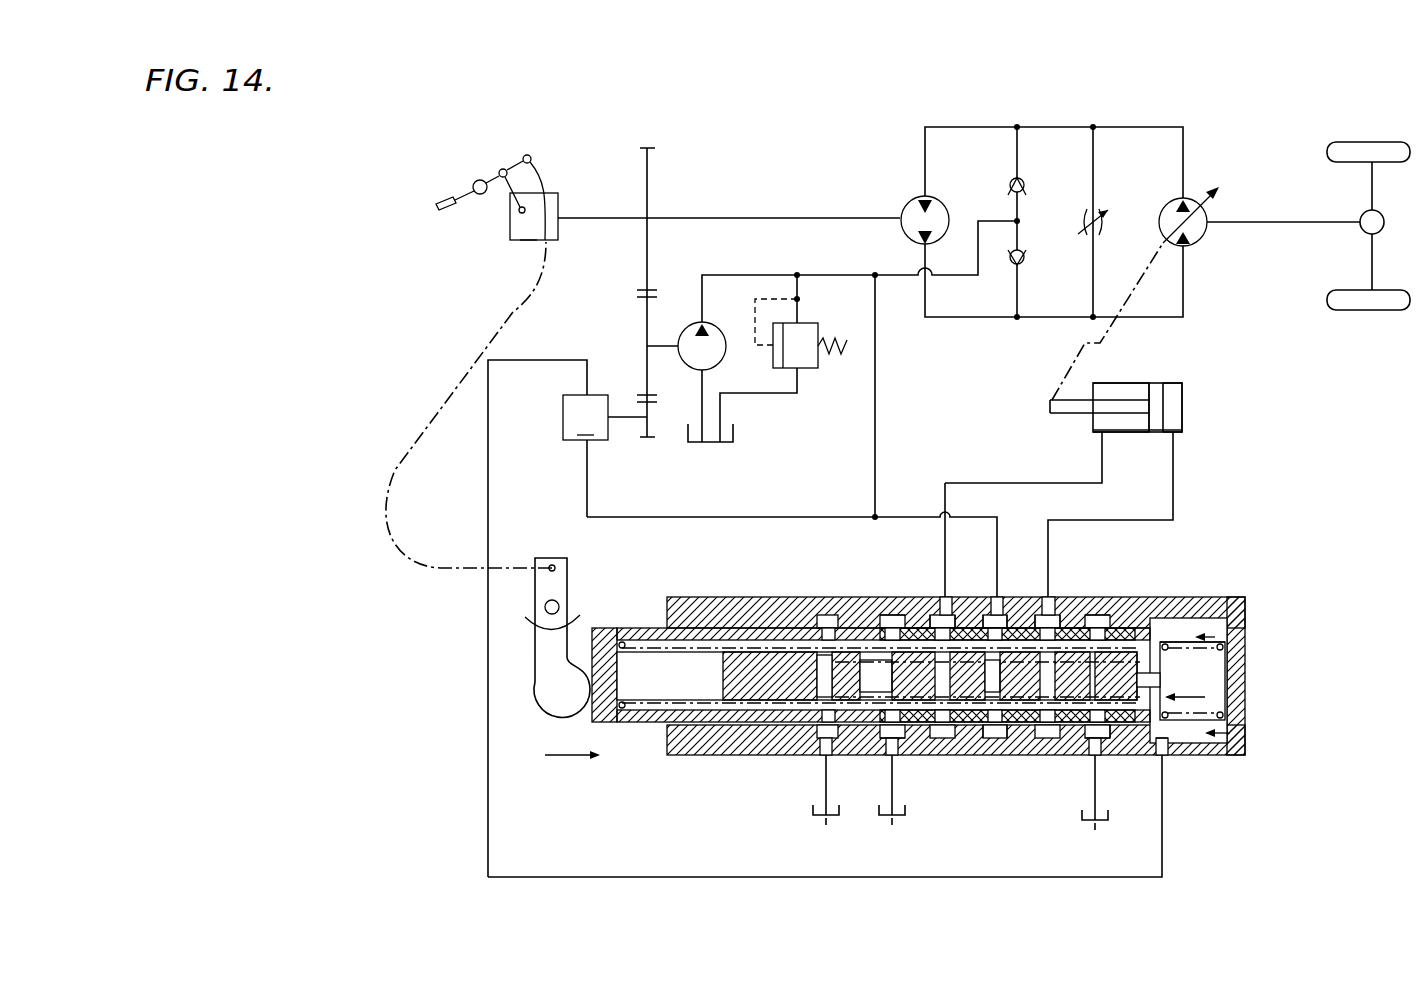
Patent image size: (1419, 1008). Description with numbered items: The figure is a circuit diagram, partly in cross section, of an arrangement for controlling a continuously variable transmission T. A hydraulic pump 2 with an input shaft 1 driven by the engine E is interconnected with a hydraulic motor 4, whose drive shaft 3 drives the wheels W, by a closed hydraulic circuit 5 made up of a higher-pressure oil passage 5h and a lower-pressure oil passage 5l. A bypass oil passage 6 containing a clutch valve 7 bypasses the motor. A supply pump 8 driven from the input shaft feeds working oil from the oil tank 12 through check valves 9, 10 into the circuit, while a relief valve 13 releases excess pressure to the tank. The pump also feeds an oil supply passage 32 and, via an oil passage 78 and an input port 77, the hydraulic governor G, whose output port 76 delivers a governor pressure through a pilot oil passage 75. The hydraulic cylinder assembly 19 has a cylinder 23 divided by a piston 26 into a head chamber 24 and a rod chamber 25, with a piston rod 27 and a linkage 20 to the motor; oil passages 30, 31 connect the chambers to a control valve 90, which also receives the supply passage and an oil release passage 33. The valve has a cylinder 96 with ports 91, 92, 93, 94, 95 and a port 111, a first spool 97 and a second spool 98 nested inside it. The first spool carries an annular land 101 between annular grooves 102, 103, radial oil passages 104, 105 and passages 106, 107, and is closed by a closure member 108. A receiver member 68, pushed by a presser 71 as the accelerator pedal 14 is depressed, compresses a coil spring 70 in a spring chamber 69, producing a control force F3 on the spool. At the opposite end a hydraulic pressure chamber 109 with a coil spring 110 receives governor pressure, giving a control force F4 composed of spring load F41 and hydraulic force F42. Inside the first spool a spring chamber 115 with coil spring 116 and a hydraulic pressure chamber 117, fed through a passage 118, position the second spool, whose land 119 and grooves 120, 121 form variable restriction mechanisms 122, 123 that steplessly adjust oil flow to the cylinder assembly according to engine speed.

The input shaft 1 is at (748, 218).
The hydraulic pump 2 is at (902, 210).
The drive shaft 3 is at (1277, 222).
The hydraulic motor 4 is at (1200, 243).
The closed hydraulic circuit 5 is at (1183, 147).
The lower-pressure oil passage 5l is at (967, 127).
The higher-pressure oil passage 5h is at (975, 318).
The bypass oil passage 6 is at (1093, 168).
The clutch valve 7 is at (1084, 222).
The supply pump 8 is at (718, 331).
The check valve 9 is at (1023, 181).
The check valve 10 is at (1023, 262).
The oil tank 12 is at (735, 431).
The relief valve 13 is at (808, 370).
The accelerator pedal 14 is at (444, 205).
The hydraulic cylinder assembly 19 is at (1148, 378).
The linkage 20 is at (1085, 343).
The cylinder 23 is at (1130, 432).
The head chamber 24 is at (1182, 402).
The rod chamber 25 is at (1118, 383).
The piston 26 is at (1158, 393).
The piston rod 27 is at (1072, 410).
The oil passage 30 is at (1173, 468).
The oil passage 31 is at (1102, 467).
The oil supply passage 32 is at (882, 514).
The oil release passage 33 is at (892, 783).
The receiver member 68 is at (608, 628).
The spring chamber 69 is at (646, 690).
The coil spring 70 is at (687, 648).
The presser 71 is at (540, 647).
The pilot oil passage 75 is at (925, 877).
The output port 76 is at (588, 395).
The input port 77 is at (588, 446).
The oil passage 78 is at (750, 517).
The control valve 90 is at (965, 672).
The port 91 is at (1052, 612).
The port 92 is at (945, 620).
The port 93 is at (992, 582).
The port 94 is at (1092, 756).
The port 95 is at (893, 757).
The cylinder 96 is at (1120, 600).
The first spool 97 is at (1140, 745).
The second spool 98 is at (1011, 687).
The annular land 101 is at (1000, 722).
The annular groove 102 is at (1075, 625).
The annular groove 103 is at (925, 640).
The oil passage 104 is at (996, 612).
The oil passage 105 is at (965, 612).
The oil passage 106 is at (1010, 628).
The oil passage 107 is at (920, 681).
The closure member 108 is at (771, 690).
The hydraulic pressure chamber 109 is at (1230, 682).
The coil spring 110 is at (1226, 648).
The port 111 is at (1164, 757).
The spring chamber 115 is at (840, 678).
The coil spring 116 is at (858, 640).
The hydraulic pressure chamber 117 is at (1111, 676).
The passage 118 is at (1160, 682).
The annular land 119 is at (986, 722).
The annular groove 120 is at (1022, 677).
The annular groove 121 is at (966, 677).
The variable restriction mechanism 122 is at (1069, 677).
The variable restriction mechanism 123 is at (987, 680).
The engine E is at (531, 203).
The hydraulic governor G is at (605, 417).
The continuously variable transmission T is at (1172, 112).
The wheels W is at (1352, 142).
The control force F3 is at (572, 772).
The control force F4 is at (1232, 742).
The spring load F41 is at (1238, 616).
The hydraulic pressure force F42 is at (1233, 703).